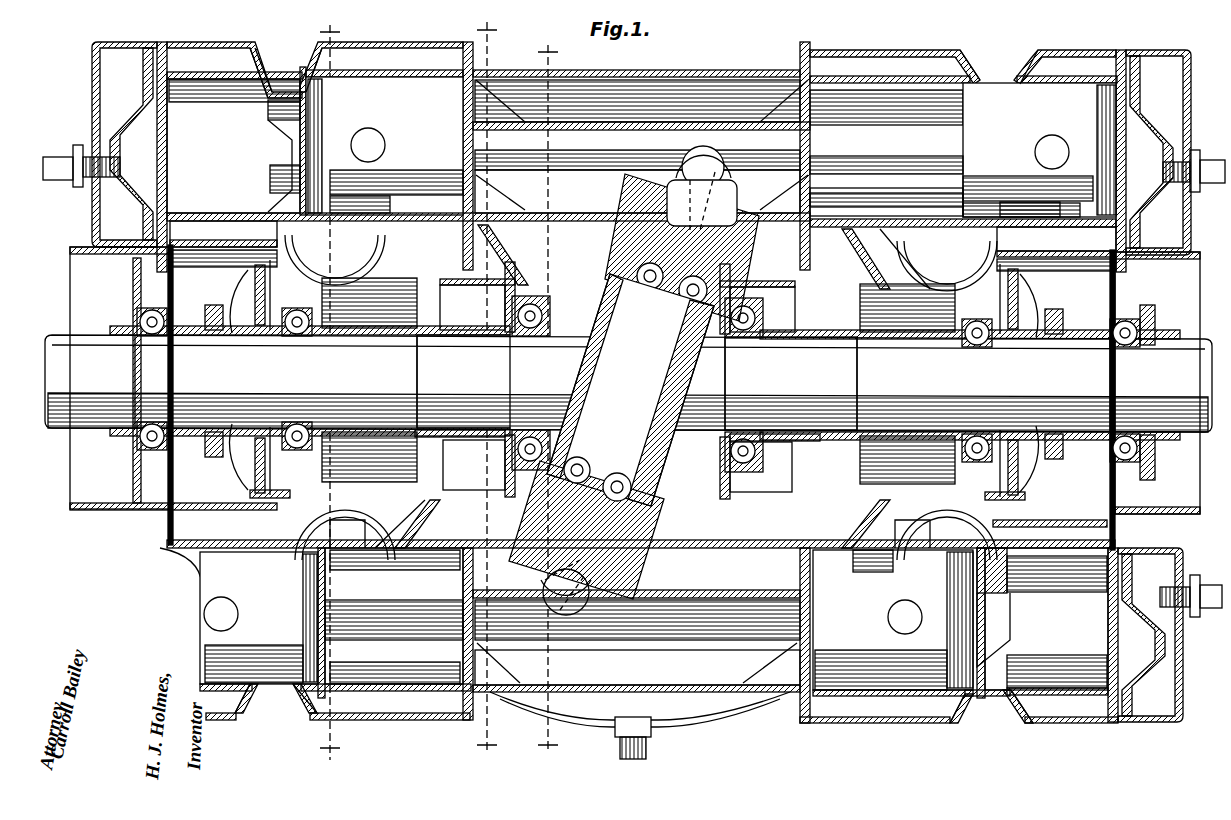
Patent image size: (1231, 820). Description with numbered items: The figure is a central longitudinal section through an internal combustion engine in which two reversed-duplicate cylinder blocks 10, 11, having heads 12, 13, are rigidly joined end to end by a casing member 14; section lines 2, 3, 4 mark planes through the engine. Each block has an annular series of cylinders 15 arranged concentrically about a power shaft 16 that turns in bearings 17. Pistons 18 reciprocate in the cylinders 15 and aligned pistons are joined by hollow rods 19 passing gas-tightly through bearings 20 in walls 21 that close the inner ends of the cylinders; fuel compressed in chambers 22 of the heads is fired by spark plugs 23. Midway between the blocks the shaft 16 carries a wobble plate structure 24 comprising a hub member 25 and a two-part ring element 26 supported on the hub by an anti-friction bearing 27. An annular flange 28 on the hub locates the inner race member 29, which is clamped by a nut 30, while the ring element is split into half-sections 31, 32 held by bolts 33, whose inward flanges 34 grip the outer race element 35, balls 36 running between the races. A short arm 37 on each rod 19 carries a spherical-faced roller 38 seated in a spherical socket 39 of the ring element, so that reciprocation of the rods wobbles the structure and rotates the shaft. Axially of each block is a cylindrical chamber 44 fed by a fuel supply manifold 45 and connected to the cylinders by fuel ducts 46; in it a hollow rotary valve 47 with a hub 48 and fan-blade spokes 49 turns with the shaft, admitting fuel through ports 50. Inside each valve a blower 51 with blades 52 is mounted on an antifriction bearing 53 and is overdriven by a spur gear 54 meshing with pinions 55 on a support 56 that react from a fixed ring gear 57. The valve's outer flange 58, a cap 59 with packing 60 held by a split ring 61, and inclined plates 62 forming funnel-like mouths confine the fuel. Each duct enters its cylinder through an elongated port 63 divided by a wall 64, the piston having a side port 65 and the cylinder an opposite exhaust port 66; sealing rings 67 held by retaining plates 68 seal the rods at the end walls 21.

The section line 2 is at (327, 384).
The section line 3 is at (482, 386).
The section line 4 is at (542, 392).
The cylinder block 10 is at (186, 42).
The cylinder block 11 is at (1078, 56).
The cylinder head 12 is at (92, 70).
The cylinder head 13 is at (1165, 56).
The casing member 14 is at (674, 76).
The cylinder 15 is at (637, 384).
The power shaft 16 is at (628, 383).
The bearing 17 is at (137, 320).
The piston 18 is at (638, 383).
The connecting rod 19 is at (695, 640).
The bearing 20 is at (522, 176).
The wall 21 is at (455, 652).
The chamber 22 is at (135, 188).
The spark plug 23 is at (62, 155).
The wobble plate structure 24 is at (630, 238).
The hub member 25 is at (630, 390).
The ring element 26 is at (620, 558).
The anti-friction bearing 27 is at (650, 500).
The annular flange 28 is at (590, 346).
The inner race member 29 is at (666, 294).
The nut 30 is at (660, 478).
The half-section 31 is at (655, 198).
The half-section 32 is at (781, 262).
The bolt 33 is at (607, 583).
The flange 34 is at (628, 262).
The outer race element 35 is at (630, 528).
The balls 36 is at (671, 335).
The arm 37 is at (690, 158).
The roller 38 is at (746, 194).
The socket 39 is at (762, 234).
The cylindrical chamber 44 is at (634, 467).
The fuel supply manifold 45 is at (500, 245).
The fuel duct 46 is at (870, 257).
The rotary valve 47 is at (649, 388).
The hub 48 is at (470, 336).
The spoke 49 is at (432, 453).
The port 50 is at (858, 504).
The blower 51 is at (343, 504).
The blade 52 is at (375, 330).
The antifriction bearing 53 is at (297, 335).
The spur gear 54 is at (262, 450).
The pinion 55 is at (250, 287).
The support 56 is at (255, 462).
The ring gear 57 is at (250, 488).
The flange 58 is at (275, 510).
The cap 59 is at (232, 304).
The packing 60 is at (212, 445).
The split ring 61 is at (1040, 506).
The inclined plate 62 is at (640, 298).
The port 63 is at (641, 397).
The wall 64 is at (641, 242).
The port 65 is at (386, 196).
The exhaust port 66 is at (287, 54).
The sealing ring 67 is at (268, 178).
The retaining plate 68 is at (452, 587).